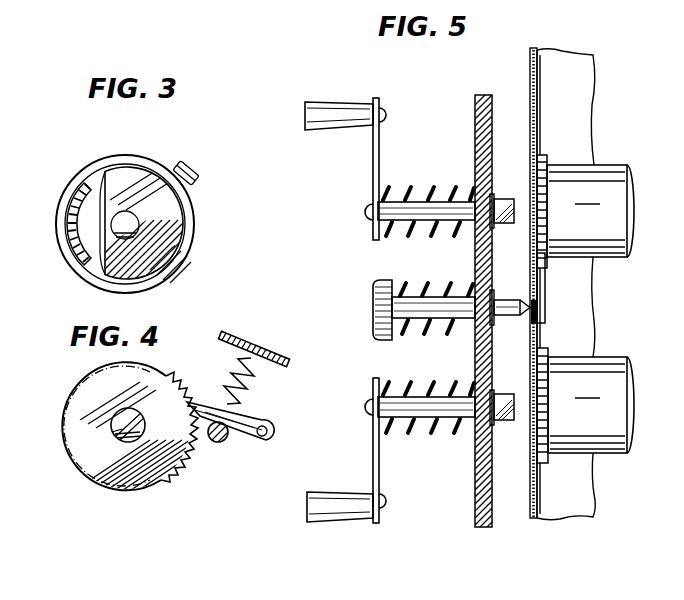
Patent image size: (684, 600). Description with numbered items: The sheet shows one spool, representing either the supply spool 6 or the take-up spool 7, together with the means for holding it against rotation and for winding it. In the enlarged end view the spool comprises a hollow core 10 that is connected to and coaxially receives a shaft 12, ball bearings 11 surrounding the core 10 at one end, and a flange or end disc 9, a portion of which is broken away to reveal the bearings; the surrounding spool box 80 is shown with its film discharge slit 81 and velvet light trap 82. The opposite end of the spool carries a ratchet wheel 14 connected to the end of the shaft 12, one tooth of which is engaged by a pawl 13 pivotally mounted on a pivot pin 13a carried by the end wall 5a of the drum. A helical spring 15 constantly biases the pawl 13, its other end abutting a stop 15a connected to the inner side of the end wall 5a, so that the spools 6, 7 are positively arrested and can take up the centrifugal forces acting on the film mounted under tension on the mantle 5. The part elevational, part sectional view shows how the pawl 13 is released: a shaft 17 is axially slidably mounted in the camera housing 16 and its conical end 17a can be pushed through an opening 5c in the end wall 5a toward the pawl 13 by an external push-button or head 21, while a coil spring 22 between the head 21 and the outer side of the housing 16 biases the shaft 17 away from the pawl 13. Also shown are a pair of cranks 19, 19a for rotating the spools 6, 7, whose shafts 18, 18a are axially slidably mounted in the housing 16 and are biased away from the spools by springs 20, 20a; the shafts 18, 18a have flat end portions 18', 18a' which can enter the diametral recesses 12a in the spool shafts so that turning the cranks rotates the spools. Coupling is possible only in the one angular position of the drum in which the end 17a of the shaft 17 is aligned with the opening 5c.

In FIG. 3, the mantle 5 is at (63, 276).
In FIG. 4, the mantle 5 is at (52, 434).
In FIG. 5, the mantle 5 is at (594, 303).
In FIG. 5, the end wall 5a is at (529, 68).
In FIG. 5, the opening 5c is at (527, 329).
In FIG. 5, the supply spool 6 is at (622, 192).
In FIG. 5, the take-up spool 7 is at (612, 452).
In FIG. 3, the end disc 9 is at (185, 242).
In FIG. 3, the hollow core 10 is at (95, 185).
In FIG. 3, the ball bearings 11 is at (72, 205).
In FIG. 3, the shaft 12 is at (132, 218).
In FIG. 4, the shaft 12 is at (136, 413).
In FIG. 4, the diametral recess 12a is at (118, 436).
In FIG. 4, the pawl 13 is at (254, 420).
In FIG. 5, the pawl 13 is at (546, 274).
In FIG. 4, the pivot pin 13a is at (275, 434).
In FIG. 4, the ratchet wheel 14 is at (160, 475).
In FIG. 5, the ratchet wheel 14 is at (545, 156).
In FIG. 4, the helical spring 15 is at (226, 376).
In FIG. 4, the stop 15a is at (262, 348).
In FIG. 5, the housing 16 is at (476, 117).
In FIG. 4, the shaft 17 is at (220, 443).
In FIG. 5, the shaft 17 is at (410, 290).
In FIG. 5, the conical end 17a is at (522, 298).
In FIG. 5, the shaft 18 is at (429, 192).
In FIG. 5, the flat end portion 18' is at (508, 192).
In FIG. 5, the shaft 18a is at (429, 386).
In FIG. 5, the flat end portion 18a' is at (512, 429).
In FIG. 5, the crank 19 is at (332, 131).
In FIG. 5, the crank 19a is at (348, 493).
In FIG. 5, the spring 20 is at (454, 186).
In FIG. 5, the spring 20a is at (441, 436).
In FIG. 5, the push-button 21 is at (372, 292).
In FIG. 5, the coil spring 22 is at (446, 284).
In FIG. 3, the spool box 80 is at (188, 218).
In FIG. 3, the film discharge slit 81 is at (182, 162).
In FIG. 3, the velvet light trap 82 is at (192, 168).